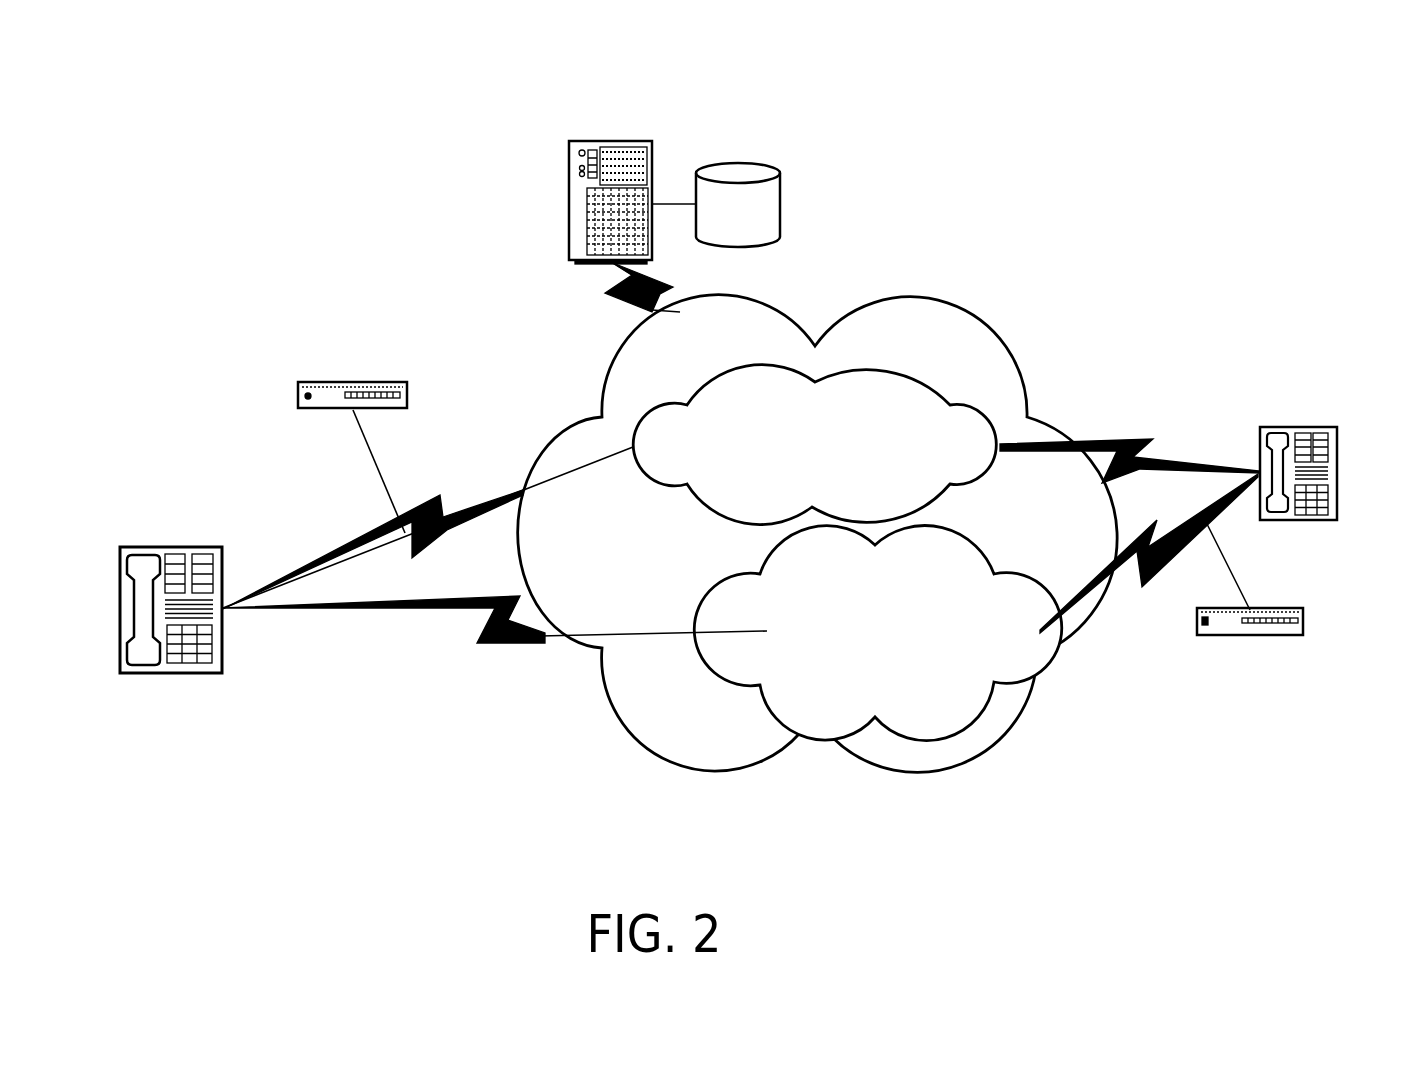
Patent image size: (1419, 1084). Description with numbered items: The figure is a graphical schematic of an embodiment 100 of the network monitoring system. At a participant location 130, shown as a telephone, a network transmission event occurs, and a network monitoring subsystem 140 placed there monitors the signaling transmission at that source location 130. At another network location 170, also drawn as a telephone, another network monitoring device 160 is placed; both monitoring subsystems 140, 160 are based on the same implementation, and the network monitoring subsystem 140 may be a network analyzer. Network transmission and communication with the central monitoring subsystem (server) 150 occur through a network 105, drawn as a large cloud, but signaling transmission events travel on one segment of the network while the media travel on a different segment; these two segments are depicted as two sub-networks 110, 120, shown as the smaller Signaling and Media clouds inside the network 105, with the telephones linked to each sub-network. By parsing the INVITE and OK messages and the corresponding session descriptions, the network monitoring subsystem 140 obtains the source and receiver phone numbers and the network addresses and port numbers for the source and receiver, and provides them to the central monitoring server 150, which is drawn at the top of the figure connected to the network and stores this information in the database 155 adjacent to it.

The embodiment of the system 100 is at (1285, 159).
The network 105 is at (1004, 290).
The sub-network 110 is at (965, 397).
The sub-network 120 is at (986, 720).
The participant location 130 is at (271, 670).
The network monitoring subsystem 140 is at (338, 362).
The central monitoring subsystem (server) 150 is at (538, 225).
The database 155 is at (810, 197).
The network monitoring device 160 is at (1278, 675).
The network location 170 is at (1332, 381).